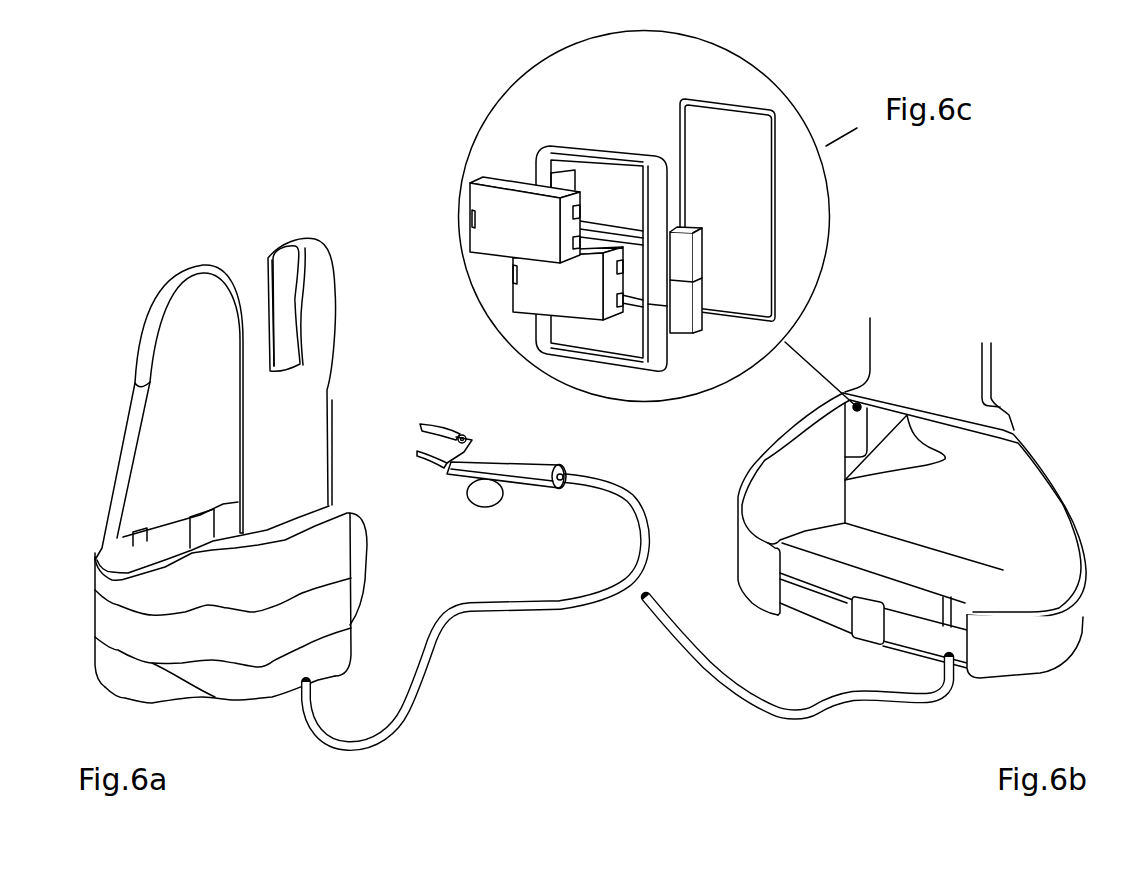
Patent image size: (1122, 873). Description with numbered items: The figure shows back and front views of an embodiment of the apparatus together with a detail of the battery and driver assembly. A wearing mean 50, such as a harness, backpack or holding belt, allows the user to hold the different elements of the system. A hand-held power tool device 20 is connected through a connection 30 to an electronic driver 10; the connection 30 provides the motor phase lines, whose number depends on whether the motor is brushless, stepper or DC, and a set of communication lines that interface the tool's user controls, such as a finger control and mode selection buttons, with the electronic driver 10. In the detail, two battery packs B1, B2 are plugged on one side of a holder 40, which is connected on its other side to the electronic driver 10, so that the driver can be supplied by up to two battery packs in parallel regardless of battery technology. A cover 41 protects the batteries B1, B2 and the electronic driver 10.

In FIG. 6C, the electronic driver 10 is at (691, 320).
In FIG. 6A, the hand-held power tool device 20 is at (507, 464).
In FIG. 6B, the connection 30 is at (856, 701).
In FIG. 6C, the holder 40 is at (604, 145).
In FIG. 6C, the cover 41 is at (748, 103).
In FIG. 6A, the wearing mean 50 is at (130, 641).
In FIG. 6C, the first battery B1 is at (490, 200).
In FIG. 6C, the second battery B2 is at (530, 290).